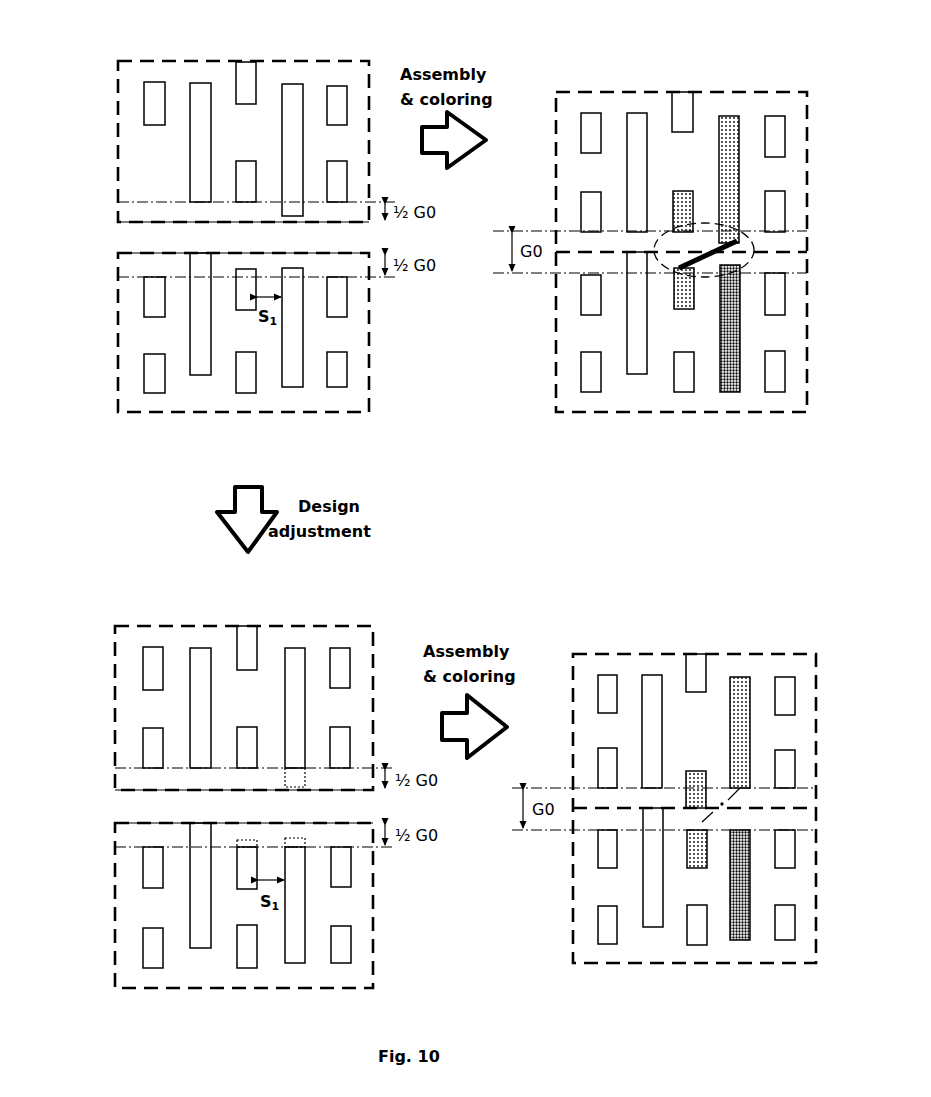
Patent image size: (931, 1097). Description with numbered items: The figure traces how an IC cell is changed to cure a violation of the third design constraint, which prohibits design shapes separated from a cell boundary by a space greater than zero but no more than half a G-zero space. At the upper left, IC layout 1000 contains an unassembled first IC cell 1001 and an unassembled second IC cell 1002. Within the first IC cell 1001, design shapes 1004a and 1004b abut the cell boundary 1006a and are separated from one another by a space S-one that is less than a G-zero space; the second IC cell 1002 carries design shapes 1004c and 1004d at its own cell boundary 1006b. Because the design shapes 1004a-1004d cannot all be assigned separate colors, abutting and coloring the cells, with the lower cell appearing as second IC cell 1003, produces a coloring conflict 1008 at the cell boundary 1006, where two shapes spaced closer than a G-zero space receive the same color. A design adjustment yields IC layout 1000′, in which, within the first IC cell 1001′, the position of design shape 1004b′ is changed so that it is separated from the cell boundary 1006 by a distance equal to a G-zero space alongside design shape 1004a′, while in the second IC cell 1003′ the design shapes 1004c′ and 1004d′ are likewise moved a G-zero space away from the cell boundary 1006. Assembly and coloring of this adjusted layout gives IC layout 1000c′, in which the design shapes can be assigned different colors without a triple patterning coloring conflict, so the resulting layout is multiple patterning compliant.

The IC layout 1000 is at (143, 43).
The IC layout 1000′ is at (561, 43).
The assembled and colored adjusted layout 1000c′ is at (561, 615).
The first IC cell 1001 is at (118, 137).
The first IC cell 1001′ is at (115, 710).
The second IC cell 1002 is at (118, 332).
The second gate pattern region after assembly 1003 is at (808, 331).
The adjusted second gate pattern region 1003′ is at (116, 906).
The design shape 1004a is at (247, 161).
The design shape 1004b is at (290, 85).
The design shape 1004c is at (245, 310).
The design shape 1004d is at (292, 387).
The adjusted first gate electrode segment 1004a′ is at (247, 727).
The design shape 1004b′ is at (297, 648).
The design shape 1004c′ is at (245, 889).
The design shape 1004d′ is at (295, 963).
The cell boundary 1006 is at (808, 251).
The cell boundary 1006a is at (124, 222).
The second boundary of cut region 1006b is at (124, 253).
The coloring conflict connection 1008 is at (680, 262).